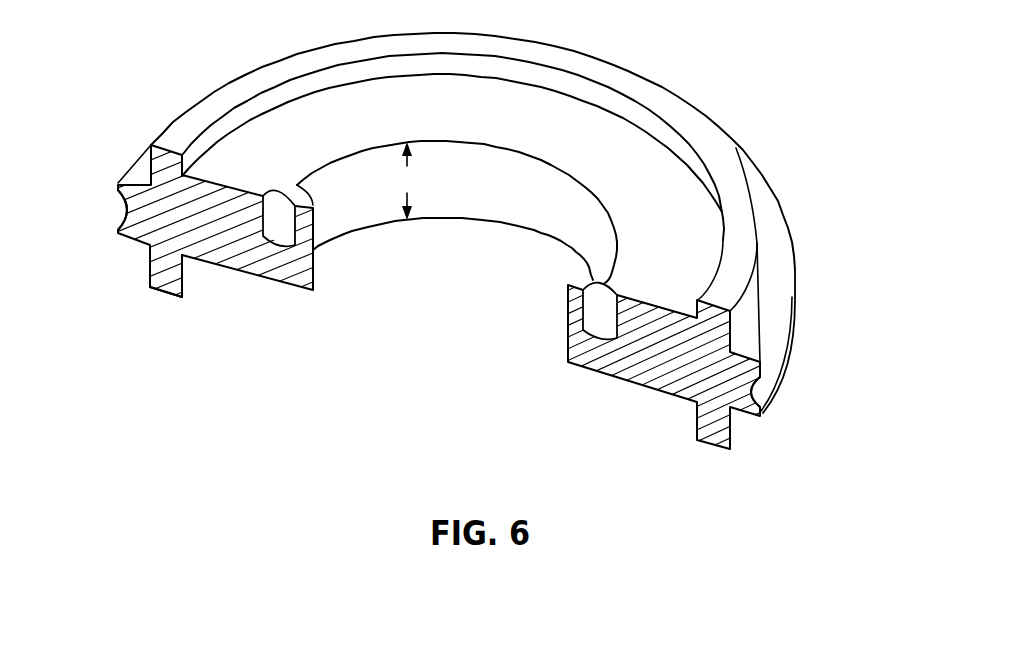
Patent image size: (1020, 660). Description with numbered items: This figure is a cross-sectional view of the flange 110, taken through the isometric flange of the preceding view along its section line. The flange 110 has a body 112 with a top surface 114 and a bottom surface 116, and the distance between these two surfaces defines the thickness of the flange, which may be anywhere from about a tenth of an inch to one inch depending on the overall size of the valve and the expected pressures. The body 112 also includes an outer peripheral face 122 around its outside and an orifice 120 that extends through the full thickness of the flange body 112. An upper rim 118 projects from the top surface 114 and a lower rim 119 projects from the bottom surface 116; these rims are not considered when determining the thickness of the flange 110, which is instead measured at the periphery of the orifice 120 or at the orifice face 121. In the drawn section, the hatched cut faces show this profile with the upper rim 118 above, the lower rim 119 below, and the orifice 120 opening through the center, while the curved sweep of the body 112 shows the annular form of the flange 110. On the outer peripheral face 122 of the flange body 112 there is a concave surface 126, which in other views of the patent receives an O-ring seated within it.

The flange 110 is at (741, 84).
The body 112 is at (787, 217).
The top surface 114 is at (613, 130).
The bottom surface 116 is at (250, 277).
The upper rim 118 is at (183, 127).
The lower rim 119 is at (192, 277).
The orifice 120 is at (488, 285).
The orifice face 121 is at (566, 224).
The outer peripheral face 122 is at (117, 181).
The concave surface 126 is at (770, 373).